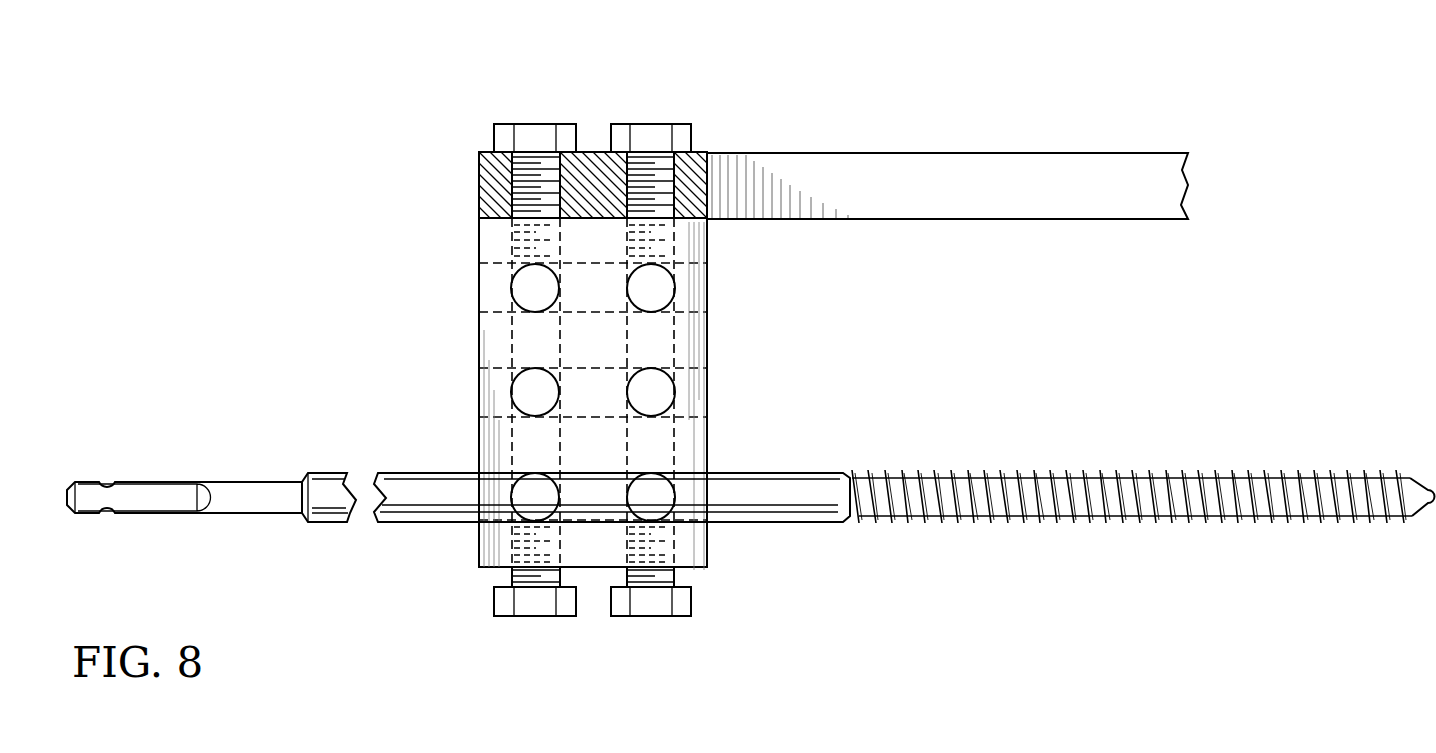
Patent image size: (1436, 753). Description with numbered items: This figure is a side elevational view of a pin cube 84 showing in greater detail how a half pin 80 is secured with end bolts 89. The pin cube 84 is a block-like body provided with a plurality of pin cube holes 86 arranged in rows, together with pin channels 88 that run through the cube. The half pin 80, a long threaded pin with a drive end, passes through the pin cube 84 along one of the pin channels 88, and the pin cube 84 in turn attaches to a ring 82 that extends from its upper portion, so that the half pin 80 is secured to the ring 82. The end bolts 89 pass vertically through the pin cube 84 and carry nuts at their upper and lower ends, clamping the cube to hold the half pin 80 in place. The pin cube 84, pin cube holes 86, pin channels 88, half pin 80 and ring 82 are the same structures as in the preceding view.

The half pin 80 is at (1143, 537).
The ring 82 is at (1065, 153).
The pin cube 84 is at (690, 338).
The pin cube holes 86 is at (511, 286).
The pin channels 88 is at (479, 400).
The bolts with nuts 89 is at (537, 124).